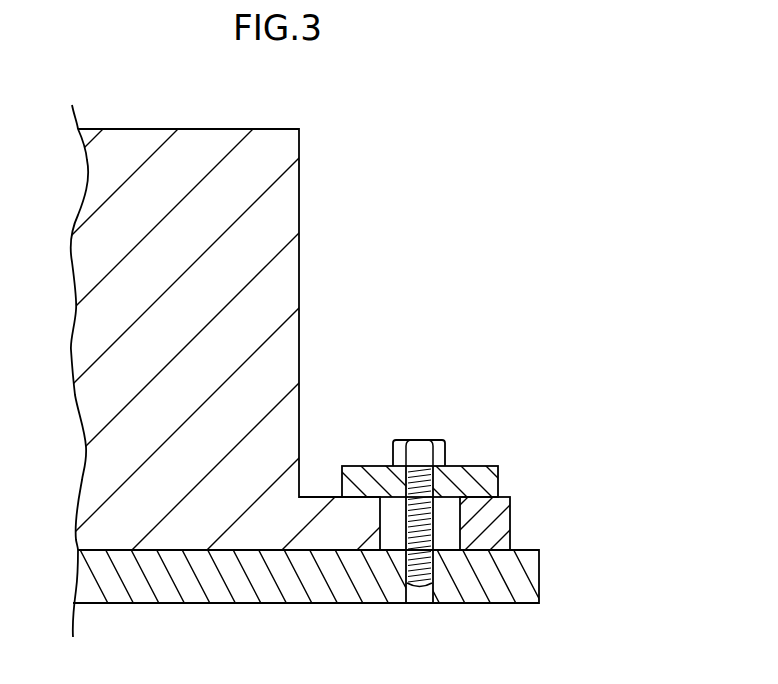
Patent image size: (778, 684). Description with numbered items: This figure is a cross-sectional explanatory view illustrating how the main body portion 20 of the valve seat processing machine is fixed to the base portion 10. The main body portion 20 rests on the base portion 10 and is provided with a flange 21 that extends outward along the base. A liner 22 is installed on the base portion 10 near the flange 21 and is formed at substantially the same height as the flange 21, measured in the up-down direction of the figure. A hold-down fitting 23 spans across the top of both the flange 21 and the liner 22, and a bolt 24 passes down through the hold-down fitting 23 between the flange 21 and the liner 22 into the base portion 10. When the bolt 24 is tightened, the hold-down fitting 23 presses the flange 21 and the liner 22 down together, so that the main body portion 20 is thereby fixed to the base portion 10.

The base portion 10 is at (552, 574).
The main body portion 20 is at (299, 190).
The flange 21 is at (333, 520).
The liner 22 is at (511, 520).
The hold-down fitting 23 is at (483, 467).
The bolt 24 is at (420, 447).